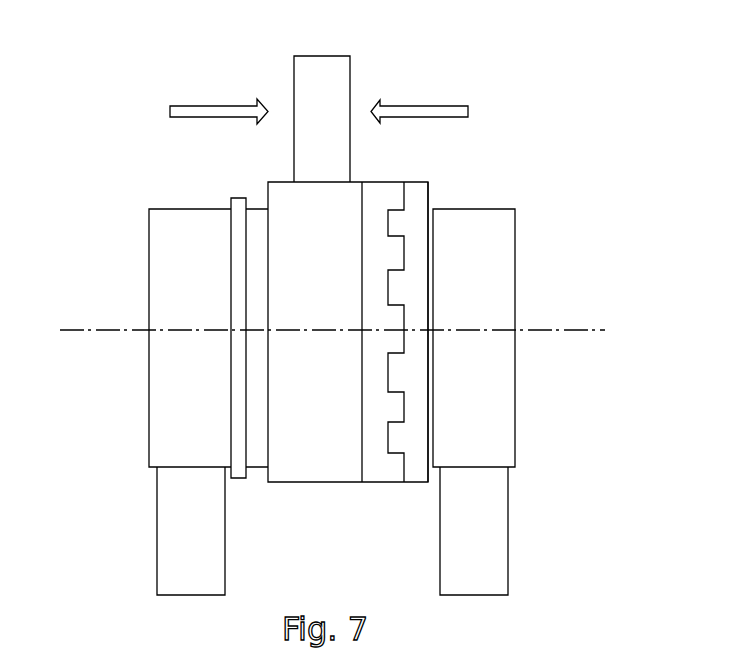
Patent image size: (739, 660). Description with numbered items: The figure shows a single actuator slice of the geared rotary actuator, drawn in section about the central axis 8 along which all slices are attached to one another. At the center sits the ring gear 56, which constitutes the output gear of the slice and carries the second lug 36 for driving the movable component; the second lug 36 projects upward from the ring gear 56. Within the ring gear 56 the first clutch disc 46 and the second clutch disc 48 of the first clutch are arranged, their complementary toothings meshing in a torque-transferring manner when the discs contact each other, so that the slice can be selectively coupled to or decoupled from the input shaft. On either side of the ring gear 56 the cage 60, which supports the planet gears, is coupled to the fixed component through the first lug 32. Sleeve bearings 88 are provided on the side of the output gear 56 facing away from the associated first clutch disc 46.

The central axis 8 is at (575, 329).
The first lug 32 is at (175, 522).
The second lug 36 is at (330, 78).
The first clutch disc 46 is at (387, 190).
The second clutch disc 48 is at (418, 257).
The ring gear 56 is at (315, 458).
The cage 60 is at (183, 418).
The sleeve bearings 88 is at (246, 250).